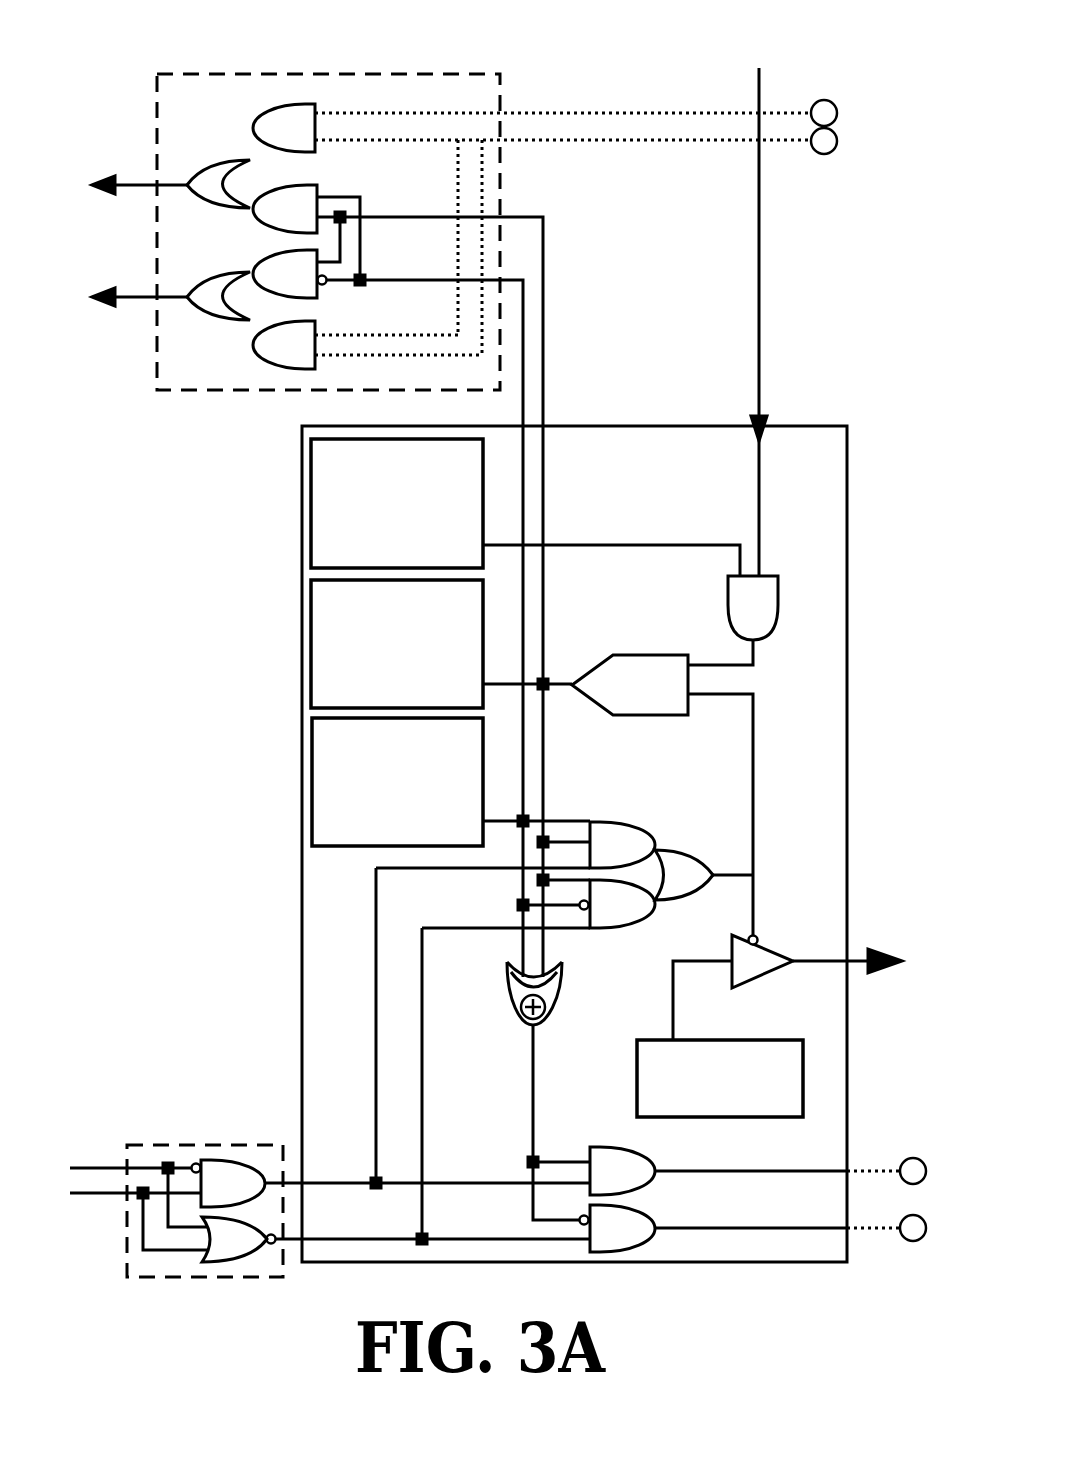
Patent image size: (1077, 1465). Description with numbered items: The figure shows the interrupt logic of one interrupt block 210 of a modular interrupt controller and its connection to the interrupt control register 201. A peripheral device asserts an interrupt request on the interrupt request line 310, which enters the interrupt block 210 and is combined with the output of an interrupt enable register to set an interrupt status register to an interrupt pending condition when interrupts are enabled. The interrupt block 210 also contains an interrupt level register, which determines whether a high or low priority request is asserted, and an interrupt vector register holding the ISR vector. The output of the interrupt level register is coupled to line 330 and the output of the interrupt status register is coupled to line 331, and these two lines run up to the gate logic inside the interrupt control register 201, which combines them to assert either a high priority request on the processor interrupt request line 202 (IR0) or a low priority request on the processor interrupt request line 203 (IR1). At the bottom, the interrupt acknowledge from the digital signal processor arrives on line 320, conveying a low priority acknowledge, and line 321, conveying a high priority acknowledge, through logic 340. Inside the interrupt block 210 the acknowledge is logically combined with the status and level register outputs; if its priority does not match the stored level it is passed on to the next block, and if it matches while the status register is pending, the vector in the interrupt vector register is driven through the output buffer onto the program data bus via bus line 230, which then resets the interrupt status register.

The interrupt control register 201 is at (228, 73).
The processor interrupt request line 202 is at (145, 182).
The processor interrupt request line 203 is at (145, 295).
The interrupt block 210 is at (302, 505).
The bus line 230 is at (847, 962).
The interrupt request line 310 is at (759, 338).
The line 320 is at (122, 1167).
The line 321 is at (122, 1196).
The line 330 is at (523, 368).
The line 331 is at (543, 325).
The logic 340 is at (186, 1145).